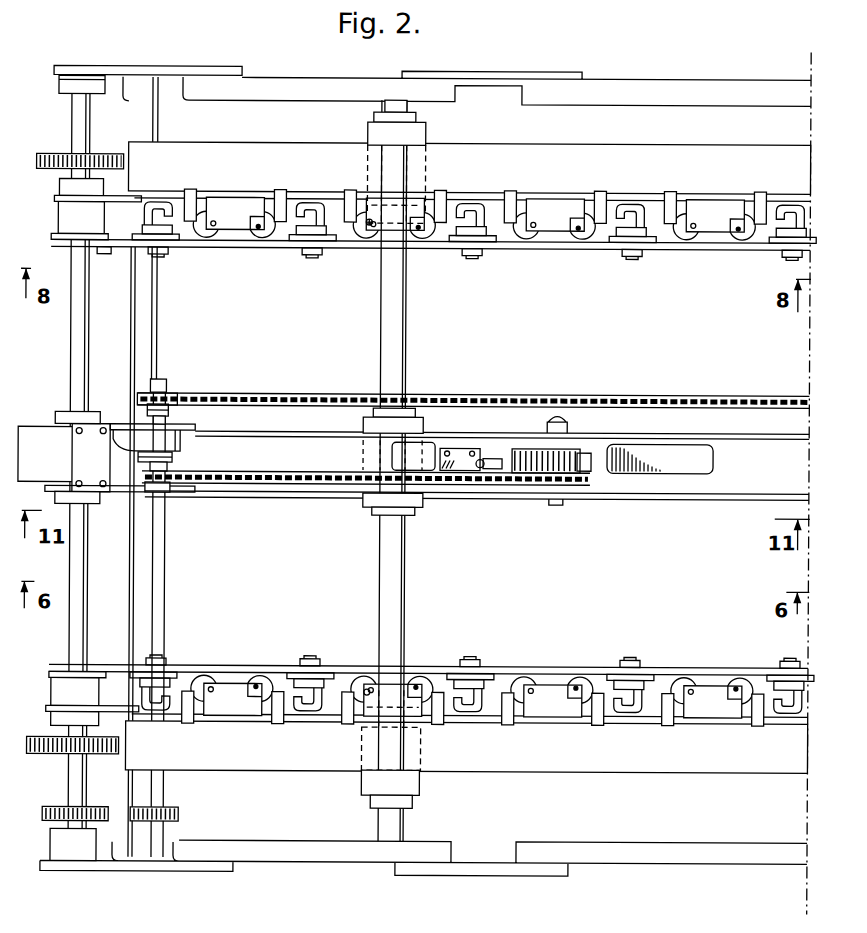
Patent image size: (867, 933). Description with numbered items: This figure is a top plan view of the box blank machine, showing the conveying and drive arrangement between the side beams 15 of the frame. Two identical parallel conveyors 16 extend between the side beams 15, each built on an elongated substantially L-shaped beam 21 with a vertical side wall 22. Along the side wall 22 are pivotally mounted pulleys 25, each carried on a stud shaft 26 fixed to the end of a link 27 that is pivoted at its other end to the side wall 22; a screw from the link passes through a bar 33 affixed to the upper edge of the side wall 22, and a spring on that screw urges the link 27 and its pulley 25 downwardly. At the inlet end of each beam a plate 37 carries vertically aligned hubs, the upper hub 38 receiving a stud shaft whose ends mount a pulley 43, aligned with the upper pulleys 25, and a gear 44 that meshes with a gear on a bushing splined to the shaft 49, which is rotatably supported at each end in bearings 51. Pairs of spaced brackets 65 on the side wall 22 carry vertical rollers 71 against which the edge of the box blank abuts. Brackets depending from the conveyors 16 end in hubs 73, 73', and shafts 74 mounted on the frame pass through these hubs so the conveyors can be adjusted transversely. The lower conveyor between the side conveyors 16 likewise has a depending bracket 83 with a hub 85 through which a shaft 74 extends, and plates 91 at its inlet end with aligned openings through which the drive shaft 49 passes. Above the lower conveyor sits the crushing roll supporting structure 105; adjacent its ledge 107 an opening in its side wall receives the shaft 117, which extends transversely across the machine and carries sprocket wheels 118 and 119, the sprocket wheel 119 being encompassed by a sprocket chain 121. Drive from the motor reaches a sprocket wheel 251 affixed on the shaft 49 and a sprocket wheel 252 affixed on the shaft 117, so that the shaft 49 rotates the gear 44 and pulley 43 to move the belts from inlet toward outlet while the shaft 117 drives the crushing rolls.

The side beams 15 is at (717, 80).
The conveyors 16 is at (490, 140).
The L-shaped beam 21 is at (580, 150).
The vertical side wall 22 is at (661, 200).
The pivotally mounted pulleys 25 is at (170, 257).
The stud shaft 26 is at (309, 256).
The link 27 is at (160, 210).
The bar 33 is at (601, 200).
The plate 37 is at (113, 198).
The upper hub 38 is at (58, 192).
The pulley 43 is at (100, 252).
The gear 44 is at (58, 155).
The shaft 49 is at (68, 341).
The bearings 51 is at (103, 96).
The brackets 65 is at (238, 208).
The vertical rollers 71 is at (208, 676).
The hub 73 is at (364, 257).
The pin 73' is at (335, 723).
The shafts 74 is at (405, 610).
The bracket 83 is at (425, 423).
The hub 85 is at (416, 509).
The plates 91 is at (120, 424).
The crushing roll supporting structure 105 is at (657, 506).
The ledge 107 is at (90, 450).
The shaft 117 is at (163, 381).
The sprocket wheel 118 is at (176, 476).
The sprocket wheel 119 is at (176, 396).
The sprocket chain 121 is at (311, 395).
The sprocket wheel 251 is at (106, 801).
The sprocket wheel 252 is at (182, 818).